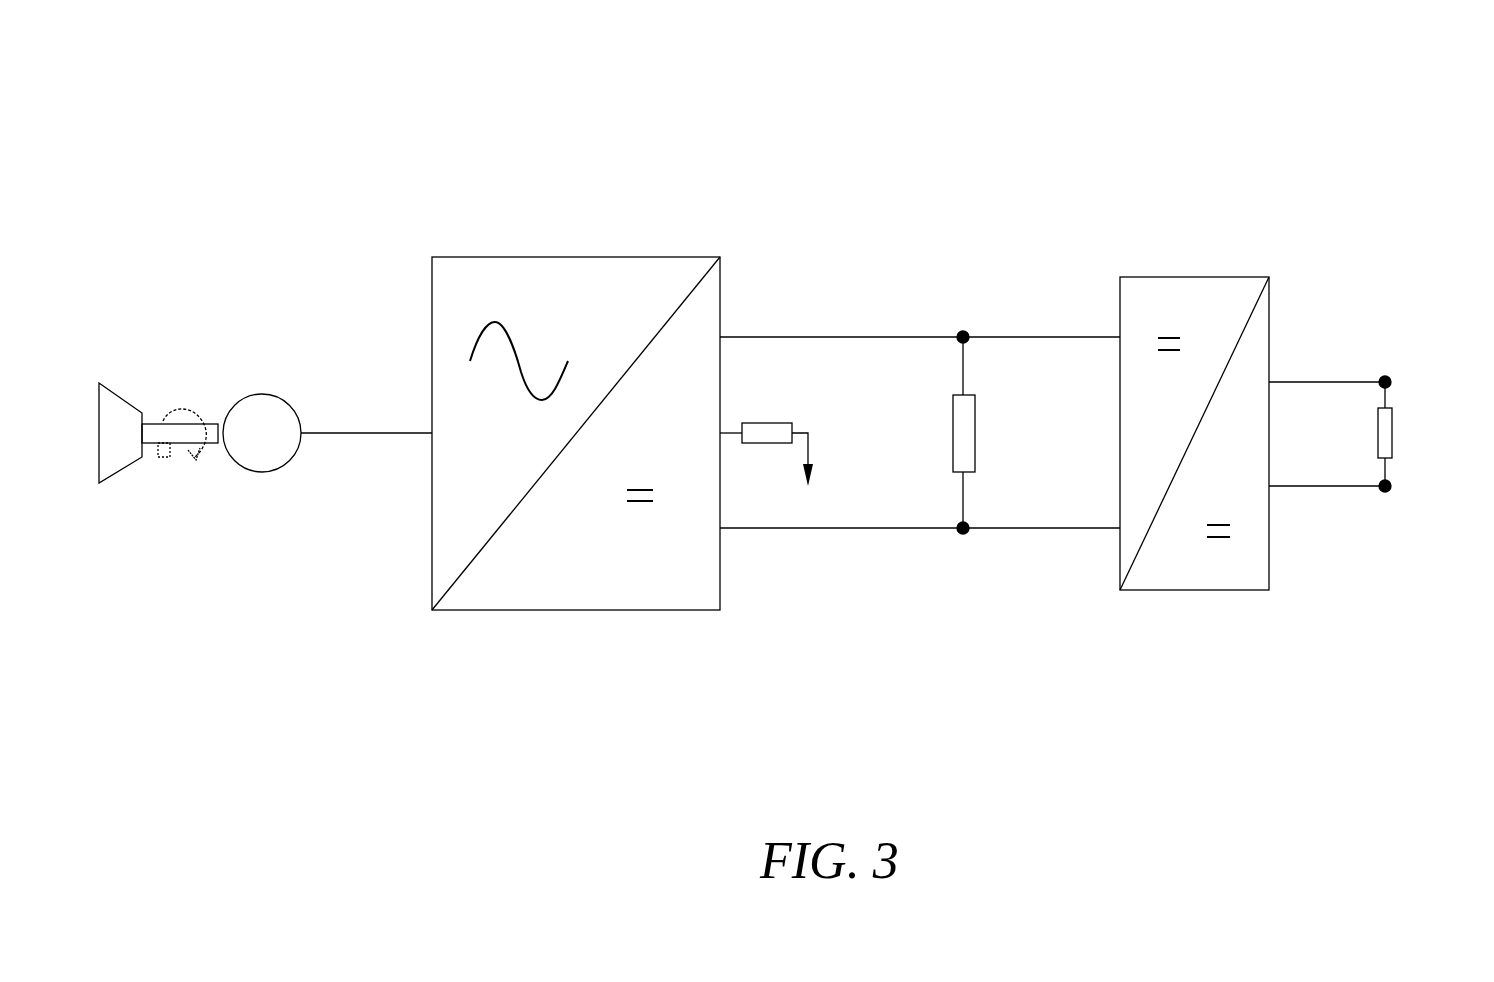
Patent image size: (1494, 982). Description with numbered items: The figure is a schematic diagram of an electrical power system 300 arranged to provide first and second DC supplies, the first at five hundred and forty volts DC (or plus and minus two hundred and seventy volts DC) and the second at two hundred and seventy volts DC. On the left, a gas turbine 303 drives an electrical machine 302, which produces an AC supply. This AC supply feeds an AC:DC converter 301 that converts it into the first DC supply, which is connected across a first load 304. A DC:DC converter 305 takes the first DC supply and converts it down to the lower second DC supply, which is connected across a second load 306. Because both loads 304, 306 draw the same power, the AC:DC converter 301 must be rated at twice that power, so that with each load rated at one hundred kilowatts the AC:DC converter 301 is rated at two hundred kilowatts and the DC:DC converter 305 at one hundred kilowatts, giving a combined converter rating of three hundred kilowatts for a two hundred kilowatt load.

The electrical power system 300 is at (438, 88).
The AC:DC converter 301 is at (575, 257).
The electrical machine 302 is at (262, 394).
The gas turbine 303 is at (120, 398).
The first load 304 is at (952, 432).
The DC:DC converter 305 is at (1195, 277).
The second load 306 is at (1392, 433).